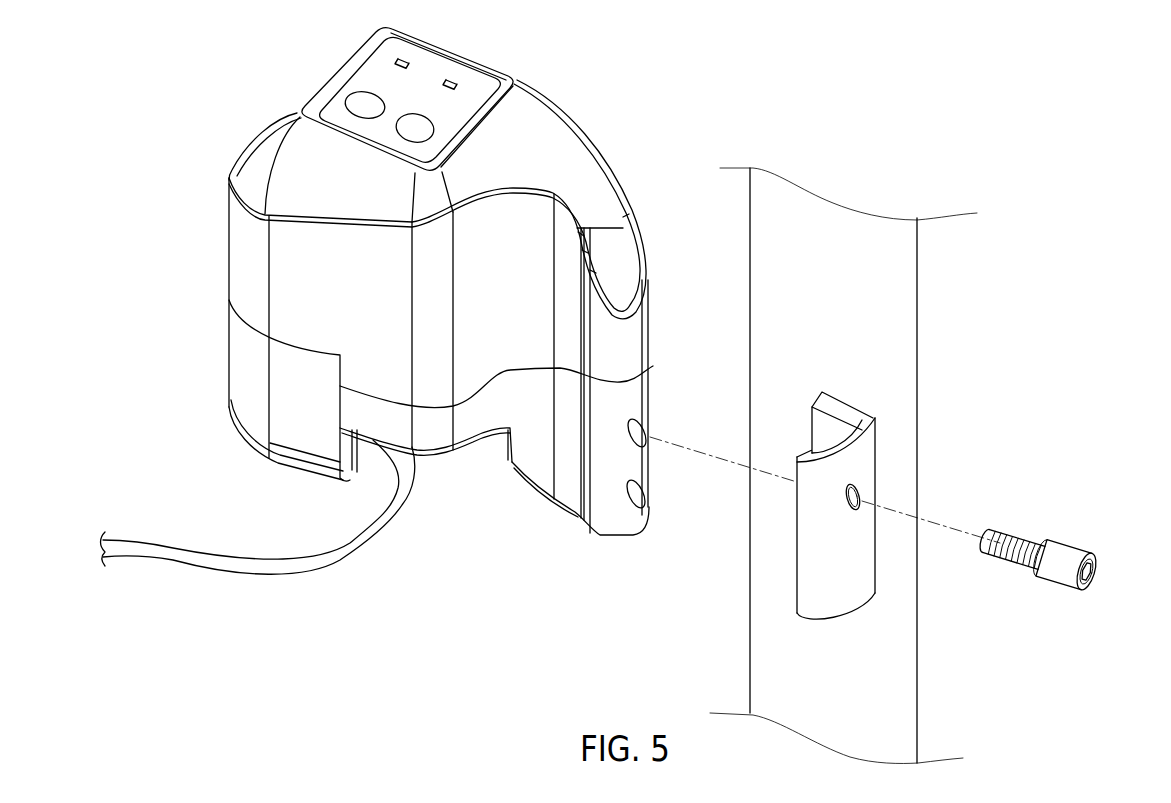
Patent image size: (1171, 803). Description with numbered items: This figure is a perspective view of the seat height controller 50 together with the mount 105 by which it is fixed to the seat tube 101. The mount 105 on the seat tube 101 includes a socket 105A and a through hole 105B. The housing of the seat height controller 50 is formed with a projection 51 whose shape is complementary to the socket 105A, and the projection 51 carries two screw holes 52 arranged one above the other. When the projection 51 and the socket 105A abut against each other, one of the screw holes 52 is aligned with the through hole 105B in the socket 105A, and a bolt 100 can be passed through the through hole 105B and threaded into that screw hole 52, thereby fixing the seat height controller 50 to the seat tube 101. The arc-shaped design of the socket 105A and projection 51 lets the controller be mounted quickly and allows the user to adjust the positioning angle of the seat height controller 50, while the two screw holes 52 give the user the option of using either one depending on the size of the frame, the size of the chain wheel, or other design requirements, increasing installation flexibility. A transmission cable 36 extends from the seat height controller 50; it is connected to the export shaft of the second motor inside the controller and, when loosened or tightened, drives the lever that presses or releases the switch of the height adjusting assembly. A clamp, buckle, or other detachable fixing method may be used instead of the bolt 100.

The transmission cable 36 is at (330, 553).
The seat height controller 50 is at (628, 338).
The projection 51 is at (611, 483).
The screw holes 52 is at (643, 428).
The bolt 100 is at (1023, 533).
The seat tube 101 is at (893, 268).
The mount 105 is at (863, 495).
The socket 105A is at (832, 451).
The through hole 105B is at (862, 509).